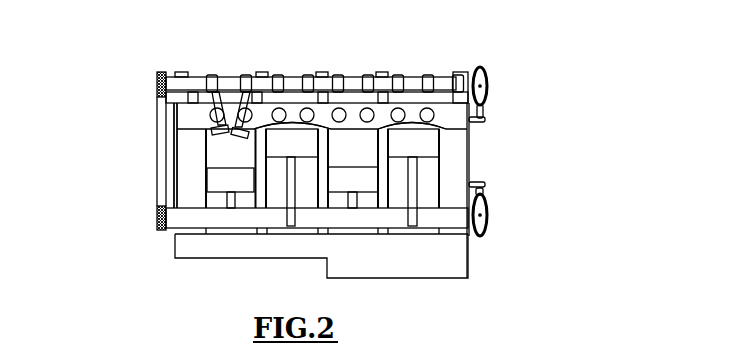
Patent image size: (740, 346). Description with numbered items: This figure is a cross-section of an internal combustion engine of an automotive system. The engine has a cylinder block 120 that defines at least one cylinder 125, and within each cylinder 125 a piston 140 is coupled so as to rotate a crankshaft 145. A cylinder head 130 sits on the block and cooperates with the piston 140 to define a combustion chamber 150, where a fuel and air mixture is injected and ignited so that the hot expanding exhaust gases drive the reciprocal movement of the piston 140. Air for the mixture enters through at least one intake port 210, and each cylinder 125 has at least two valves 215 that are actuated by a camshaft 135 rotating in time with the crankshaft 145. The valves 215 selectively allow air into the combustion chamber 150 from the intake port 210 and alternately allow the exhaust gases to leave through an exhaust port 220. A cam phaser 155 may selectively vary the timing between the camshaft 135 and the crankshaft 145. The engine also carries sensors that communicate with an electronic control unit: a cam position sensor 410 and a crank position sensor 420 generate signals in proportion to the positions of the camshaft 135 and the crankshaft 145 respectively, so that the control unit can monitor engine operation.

The cylinder block 120 is at (175, 170).
The cylinder 125 is at (320, 163).
The cylinder head 130 is at (175, 128).
The camshaft 135 is at (227, 78).
The piston 140 is at (355, 178).
The crankshaft 145 is at (200, 218).
The combustion chamber 150 is at (415, 129).
The cam phaser 155 is at (157, 82).
The intake port 210 is at (343, 110).
The valves 215 is at (236, 135).
The exhaust port 220 is at (302, 108).
The cam position sensor 410 is at (486, 118).
The crank position sensor 420 is at (485, 184).